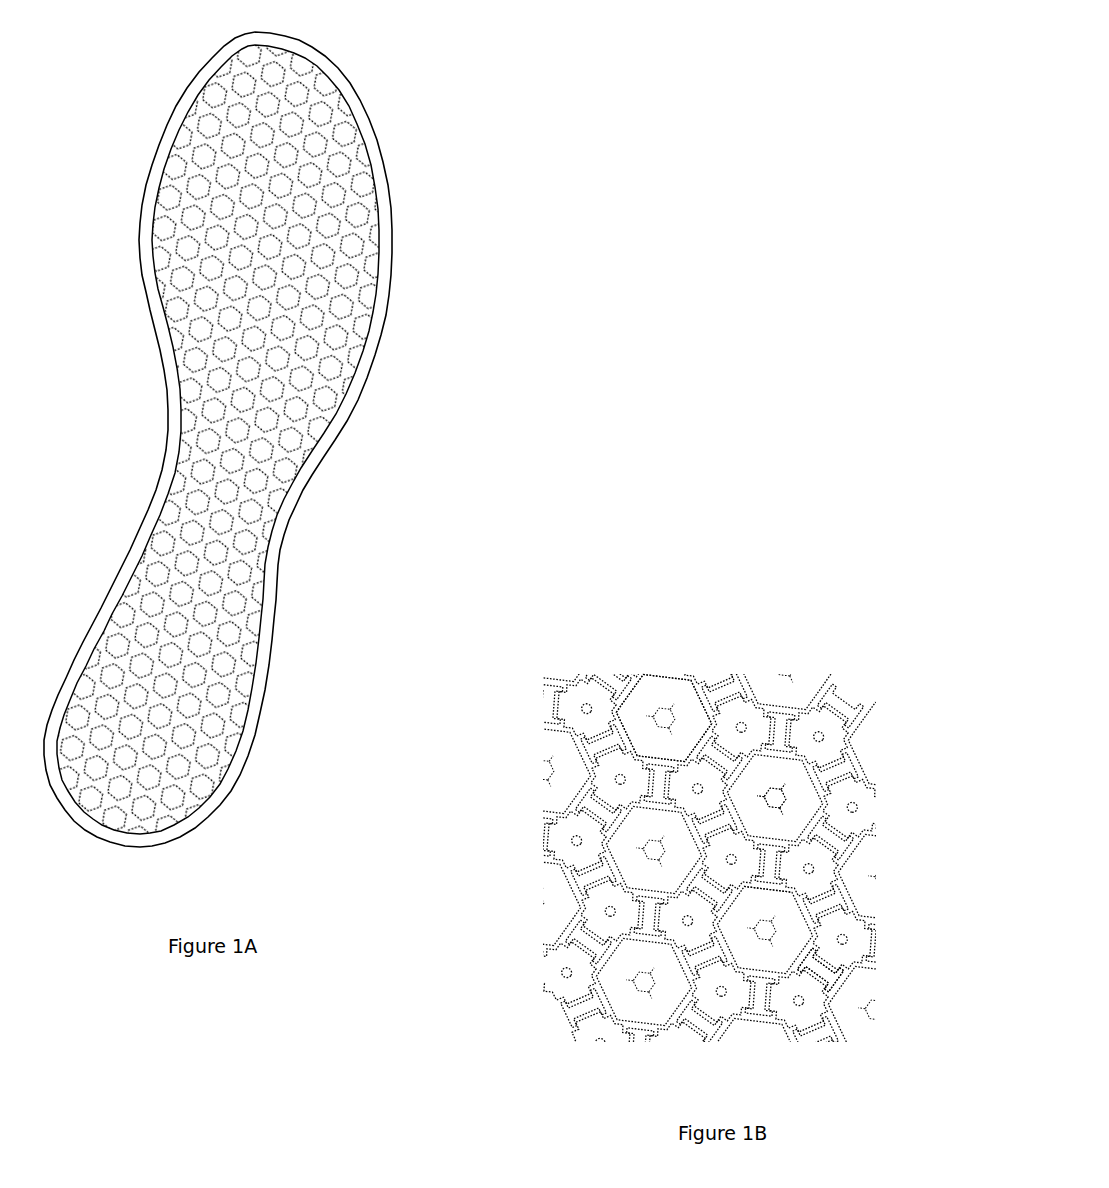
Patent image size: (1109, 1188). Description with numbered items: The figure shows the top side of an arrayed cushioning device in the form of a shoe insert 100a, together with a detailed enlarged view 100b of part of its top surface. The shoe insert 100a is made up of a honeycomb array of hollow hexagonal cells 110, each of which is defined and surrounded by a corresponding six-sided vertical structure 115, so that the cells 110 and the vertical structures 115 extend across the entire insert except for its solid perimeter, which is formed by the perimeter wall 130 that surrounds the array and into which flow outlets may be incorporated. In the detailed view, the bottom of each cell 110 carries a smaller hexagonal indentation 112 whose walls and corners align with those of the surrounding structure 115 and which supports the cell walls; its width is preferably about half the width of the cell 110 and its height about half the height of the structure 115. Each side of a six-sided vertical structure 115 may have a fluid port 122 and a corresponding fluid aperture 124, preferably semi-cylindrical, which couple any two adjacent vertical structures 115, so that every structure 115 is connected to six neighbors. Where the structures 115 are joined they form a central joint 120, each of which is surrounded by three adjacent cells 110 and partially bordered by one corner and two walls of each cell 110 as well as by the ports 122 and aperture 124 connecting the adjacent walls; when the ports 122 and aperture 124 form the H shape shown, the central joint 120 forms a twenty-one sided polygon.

In FIG. 1A, the shoe insert 100a is at (322, 843).
In FIG. 1B, the cushioning pattern 100b is at (855, 1091).
In FIG. 1A, the cells 110 is at (230, 145).
In FIG. 1B, the cells 110 is at (692, 708).
In FIG. 1B, the indentation 112 is at (777, 795).
In FIG. 1B, the six-sided vertical structure 115 is at (655, 665).
In FIG. 1A, the central joint 120 is at (342, 258).
In FIG. 1B, the central joint 120 is at (617, 903).
In FIG. 1B, the fluid port 122 is at (770, 888).
In FIG. 1B, the fluid aperture 124 is at (820, 974).
In FIG. 1A, the perimeter wall 130 is at (283, 535).